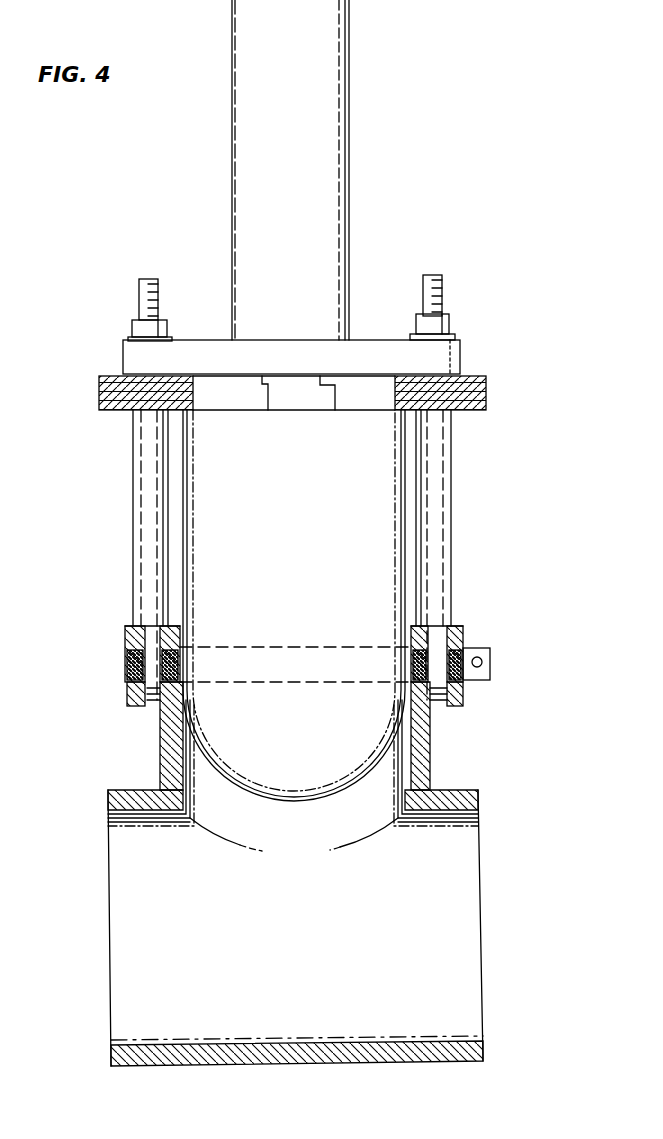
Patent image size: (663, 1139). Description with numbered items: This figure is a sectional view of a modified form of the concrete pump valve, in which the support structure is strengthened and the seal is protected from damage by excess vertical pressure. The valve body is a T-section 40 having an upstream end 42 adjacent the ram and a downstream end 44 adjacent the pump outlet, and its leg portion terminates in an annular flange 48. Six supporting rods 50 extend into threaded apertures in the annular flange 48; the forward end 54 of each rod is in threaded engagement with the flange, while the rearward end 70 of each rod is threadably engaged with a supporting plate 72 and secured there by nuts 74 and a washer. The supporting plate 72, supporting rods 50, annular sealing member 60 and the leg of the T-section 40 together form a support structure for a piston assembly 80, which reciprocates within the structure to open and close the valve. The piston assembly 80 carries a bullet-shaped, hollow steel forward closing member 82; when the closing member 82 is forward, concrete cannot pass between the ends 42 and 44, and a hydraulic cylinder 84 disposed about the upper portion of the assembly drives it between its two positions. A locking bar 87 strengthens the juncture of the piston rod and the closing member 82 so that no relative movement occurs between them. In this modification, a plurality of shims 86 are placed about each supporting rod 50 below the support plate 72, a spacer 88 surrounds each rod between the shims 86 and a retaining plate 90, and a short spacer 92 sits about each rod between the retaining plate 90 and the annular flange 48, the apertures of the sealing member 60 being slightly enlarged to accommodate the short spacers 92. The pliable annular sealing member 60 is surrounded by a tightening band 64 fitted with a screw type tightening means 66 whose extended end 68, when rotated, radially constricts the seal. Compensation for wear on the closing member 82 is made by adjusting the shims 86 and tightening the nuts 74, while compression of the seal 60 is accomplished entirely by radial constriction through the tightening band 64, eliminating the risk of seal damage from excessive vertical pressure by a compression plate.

The T-section 40 is at (470, 786).
The upstream end 42 is at (106, 948).
The downstream end 44 is at (485, 933).
The annular flange 48 is at (458, 704).
The supporting rods 50 is at (148, 480).
The forward end 54 is at (152, 703).
The annular sealing member 60 is at (168, 668).
The tightening band 64 is at (130, 690).
The screw type tightening means 66 is at (493, 648).
The extended end 68 is at (483, 663).
The rearward end 70 is at (140, 291).
The supporting plate 72 is at (135, 360).
The nuts 74 is at (133, 331).
The piston assembly 80 is at (272, 392).
The forward closing member 82 is at (302, 801).
The hydraulic cylinder 84 is at (352, 210).
The shims 86 is at (492, 390).
The locking bar 87 is at (327, 412).
The spacer 88 is at (138, 572).
The retaining plate 90 is at (465, 628).
The short spacer 92 is at (133, 660).